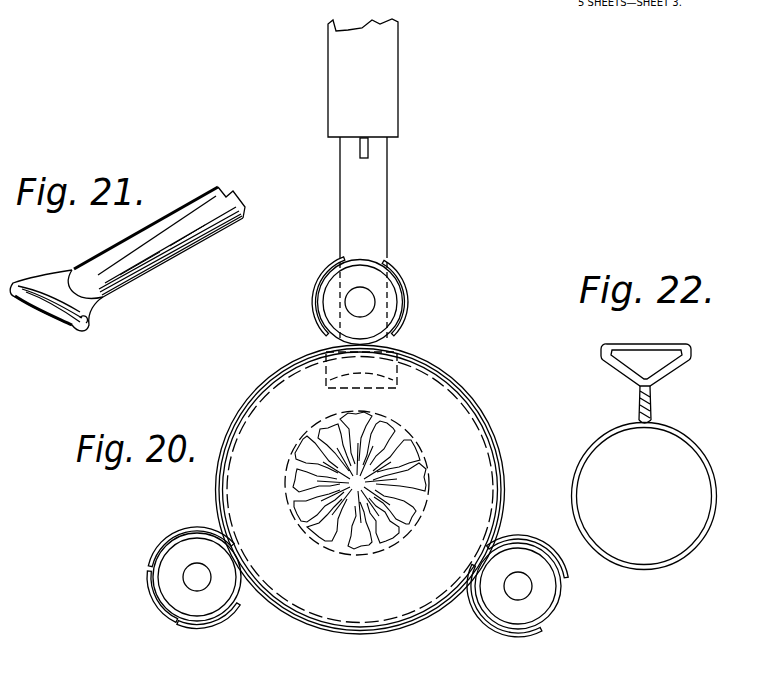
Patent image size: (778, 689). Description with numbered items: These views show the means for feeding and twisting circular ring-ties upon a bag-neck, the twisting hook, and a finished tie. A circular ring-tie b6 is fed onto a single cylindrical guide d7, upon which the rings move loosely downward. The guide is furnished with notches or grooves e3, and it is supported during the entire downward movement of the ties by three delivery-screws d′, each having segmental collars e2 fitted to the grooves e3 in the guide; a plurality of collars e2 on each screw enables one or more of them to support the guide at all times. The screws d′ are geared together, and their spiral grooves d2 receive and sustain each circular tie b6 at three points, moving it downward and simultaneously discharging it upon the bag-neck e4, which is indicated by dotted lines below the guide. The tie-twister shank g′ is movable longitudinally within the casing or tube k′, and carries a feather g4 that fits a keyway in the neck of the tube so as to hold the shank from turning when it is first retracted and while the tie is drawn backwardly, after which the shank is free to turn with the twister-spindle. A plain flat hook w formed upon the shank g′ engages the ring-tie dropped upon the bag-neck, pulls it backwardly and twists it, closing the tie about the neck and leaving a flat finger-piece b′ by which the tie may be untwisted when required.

In FIG. 20, the casing or tube k′ is at (398, 95).
In FIG. 20, the feather g4 is at (369, 148).
In FIG. 20, the shank g′ is at (387, 203).
In FIG. 21, the shank g′ is at (156, 242).
In FIG. 20, the segmental collars e2 is at (409, 300).
In FIG. 20, the circular ring-tie b6 is at (421, 626).
In FIG. 20, the notches or grooves e3 is at (459, 405).
In FIG. 20, the cylindrical guide d7 is at (483, 432).
In FIG. 20, the bag-neck e4 is at (428, 470).
In FIG. 20, the spiral grooves d2 is at (172, 605).
In FIG. 20, the delivery-screws d′ is at (172, 579).
In FIG. 21, the plain flat hook w is at (43, 312).
In FIG. 22, the plain flat hook w is at (577, 491).
In FIG. 22, the handle loop b′ is at (686, 357).